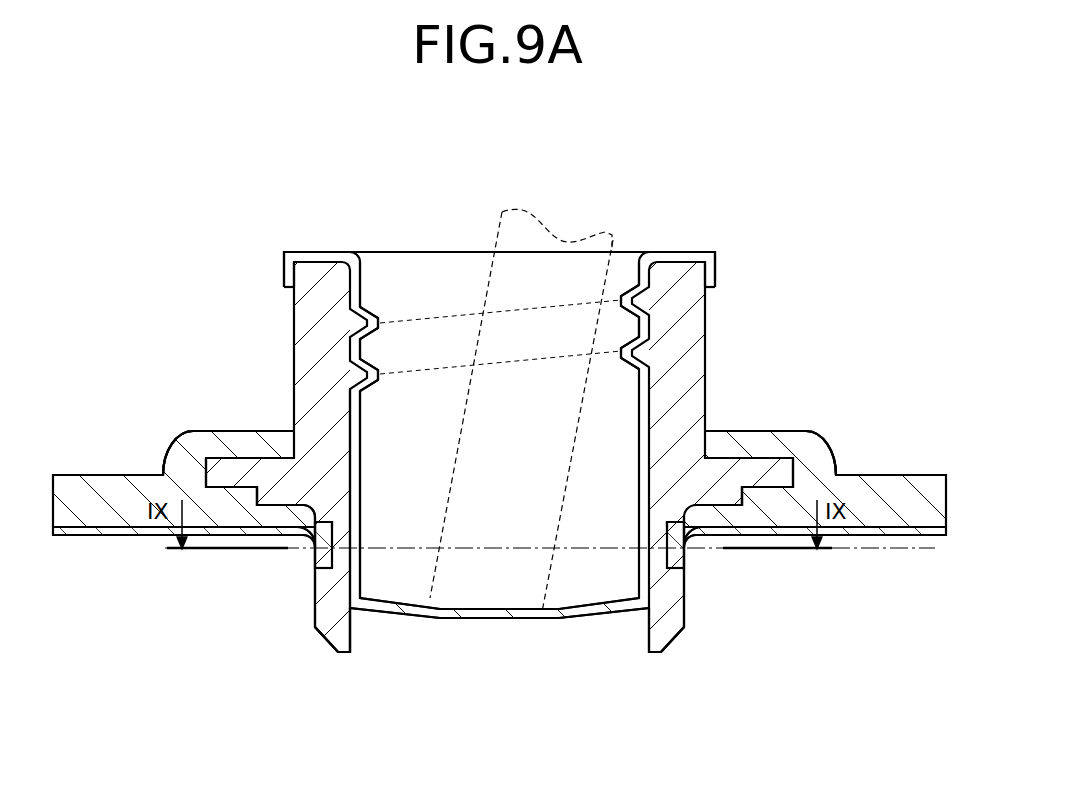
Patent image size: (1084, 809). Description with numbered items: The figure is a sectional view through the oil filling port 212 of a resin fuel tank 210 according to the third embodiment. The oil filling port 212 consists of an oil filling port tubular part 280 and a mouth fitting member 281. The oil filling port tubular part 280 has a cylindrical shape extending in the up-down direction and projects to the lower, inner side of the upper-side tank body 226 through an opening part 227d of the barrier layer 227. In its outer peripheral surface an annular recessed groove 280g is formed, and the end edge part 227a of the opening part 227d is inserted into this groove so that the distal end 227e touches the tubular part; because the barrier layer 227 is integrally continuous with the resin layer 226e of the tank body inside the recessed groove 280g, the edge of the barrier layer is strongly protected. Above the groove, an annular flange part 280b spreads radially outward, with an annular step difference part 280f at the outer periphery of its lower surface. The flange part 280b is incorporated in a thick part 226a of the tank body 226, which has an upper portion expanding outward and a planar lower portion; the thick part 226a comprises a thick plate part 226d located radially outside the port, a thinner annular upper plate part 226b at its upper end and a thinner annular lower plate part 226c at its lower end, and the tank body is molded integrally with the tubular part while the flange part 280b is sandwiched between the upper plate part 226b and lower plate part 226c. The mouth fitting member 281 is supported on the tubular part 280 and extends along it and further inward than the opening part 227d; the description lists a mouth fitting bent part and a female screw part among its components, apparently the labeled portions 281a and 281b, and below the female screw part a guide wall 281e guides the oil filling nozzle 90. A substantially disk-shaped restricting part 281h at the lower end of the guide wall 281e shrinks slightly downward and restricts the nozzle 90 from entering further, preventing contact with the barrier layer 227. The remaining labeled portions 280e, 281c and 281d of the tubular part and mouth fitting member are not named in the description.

The oil filling nozzle 90 is at (505, 210).
The fuel tank 210 is at (168, 131).
The oil filling port 212 is at (254, 147).
The upper-side tank body 226 is at (76, 468).
The thick part 226a is at (193, 378).
The upper plate part 226b is at (232, 430).
The lower plate part 226c is at (238, 500).
The thick plate part 226d is at (182, 455).
The resin layer 226e is at (332, 522).
The barrier layer 227 is at (97, 545).
The end edge part 227a is at (320, 560).
The opening part 227d is at (308, 548).
The distal end 227e is at (324, 571).
The oil filling port tubular part 280 is at (292, 312).
The flange part 280b is at (212, 460).
The leg portion 280e is at (334, 655).
The annular step difference part 280f is at (265, 512).
The recessed groove 280g is at (326, 638).
The mouth fitting member 281 is at (290, 256).
The lip portion 281a is at (312, 252).
The inner wall surface 281b is at (372, 305).
The lower end portion 281c is at (356, 640).
The thread projection 281d is at (345, 416).
The guide wall 281e is at (362, 462).
The restricting part 281h is at (586, 620).